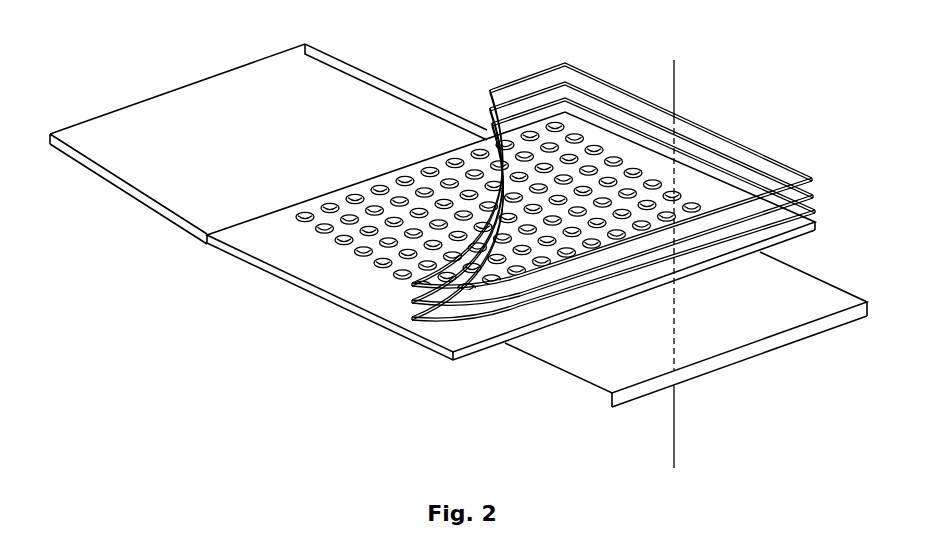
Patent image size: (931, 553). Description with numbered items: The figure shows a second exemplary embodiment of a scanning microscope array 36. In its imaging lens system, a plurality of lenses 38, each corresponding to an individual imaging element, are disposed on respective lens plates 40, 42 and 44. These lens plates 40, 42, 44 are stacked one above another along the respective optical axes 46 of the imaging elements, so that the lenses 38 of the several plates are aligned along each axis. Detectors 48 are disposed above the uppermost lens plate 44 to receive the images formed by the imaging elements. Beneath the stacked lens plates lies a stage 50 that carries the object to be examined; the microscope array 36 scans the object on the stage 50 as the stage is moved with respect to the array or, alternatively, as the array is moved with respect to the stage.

The microscope array 36 is at (697, 78).
The lenses 38 is at (376, 269).
The lens plate 40 is at (466, 352).
The lens plate 42 is at (438, 335).
The lens plate 44 is at (430, 312).
The optical axes 46 is at (677, 435).
The detectors 48 is at (749, 147).
The stage 50 is at (760, 358).